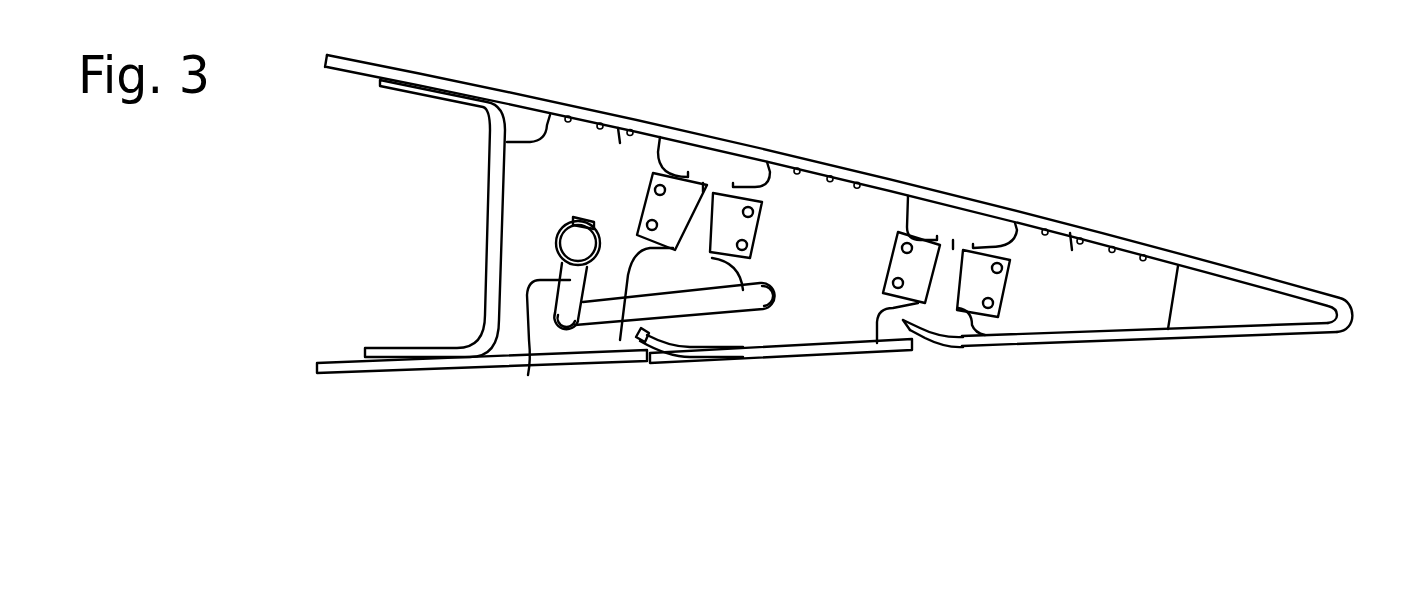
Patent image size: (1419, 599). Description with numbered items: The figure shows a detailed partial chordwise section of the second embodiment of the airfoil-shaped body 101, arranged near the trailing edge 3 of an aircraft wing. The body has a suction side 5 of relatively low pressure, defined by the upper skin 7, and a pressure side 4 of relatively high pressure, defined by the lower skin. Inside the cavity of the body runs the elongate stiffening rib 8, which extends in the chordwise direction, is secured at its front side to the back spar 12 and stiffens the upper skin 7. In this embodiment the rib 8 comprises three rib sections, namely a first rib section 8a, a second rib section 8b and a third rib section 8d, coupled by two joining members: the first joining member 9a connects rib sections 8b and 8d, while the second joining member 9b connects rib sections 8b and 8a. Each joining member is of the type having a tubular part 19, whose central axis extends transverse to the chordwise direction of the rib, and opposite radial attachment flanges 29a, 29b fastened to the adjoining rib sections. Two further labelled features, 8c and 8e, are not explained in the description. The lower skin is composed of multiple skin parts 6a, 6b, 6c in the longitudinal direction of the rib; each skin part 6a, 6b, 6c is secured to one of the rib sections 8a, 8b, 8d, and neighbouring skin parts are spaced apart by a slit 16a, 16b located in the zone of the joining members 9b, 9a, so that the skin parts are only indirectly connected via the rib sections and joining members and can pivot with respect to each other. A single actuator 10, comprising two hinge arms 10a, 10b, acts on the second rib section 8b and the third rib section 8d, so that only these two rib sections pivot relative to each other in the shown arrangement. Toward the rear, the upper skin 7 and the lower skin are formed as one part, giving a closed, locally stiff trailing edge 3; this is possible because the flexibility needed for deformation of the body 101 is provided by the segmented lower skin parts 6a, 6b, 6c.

The airfoil-shaped body 101 is at (420, 261).
The trailing edge 3 is at (1412, 322).
The pressure side 4 is at (892, 443).
The suction side 5 is at (932, 90).
The skin part 6a is at (1067, 340).
The skin part 6b is at (832, 347).
The skin part 6c is at (378, 365).
The upper skin 7 is at (1160, 248).
The elongate stiffening rib 8 is at (870, 212).
The first rib section 8a is at (1072, 250).
The second rib section 8b is at (807, 197).
The stringer 8c is at (983, 232).
The third rib section 8d is at (620, 143).
The stringer 8e is at (738, 168).
The first joining member 9a is at (620, 340).
The second joining member 9b is at (970, 318).
The actuator 10 is at (570, 317).
The hinge arm 10a is at (725, 303).
The hinge arm 10b is at (528, 375).
The back spar 12 is at (492, 302).
The slit 16a is at (653, 352).
The slit 16b is at (917, 342).
The tubular part 19 is at (703, 190).
The radial attachment flange 29a is at (743, 232).
The radial attachment flange 29b is at (660, 207).